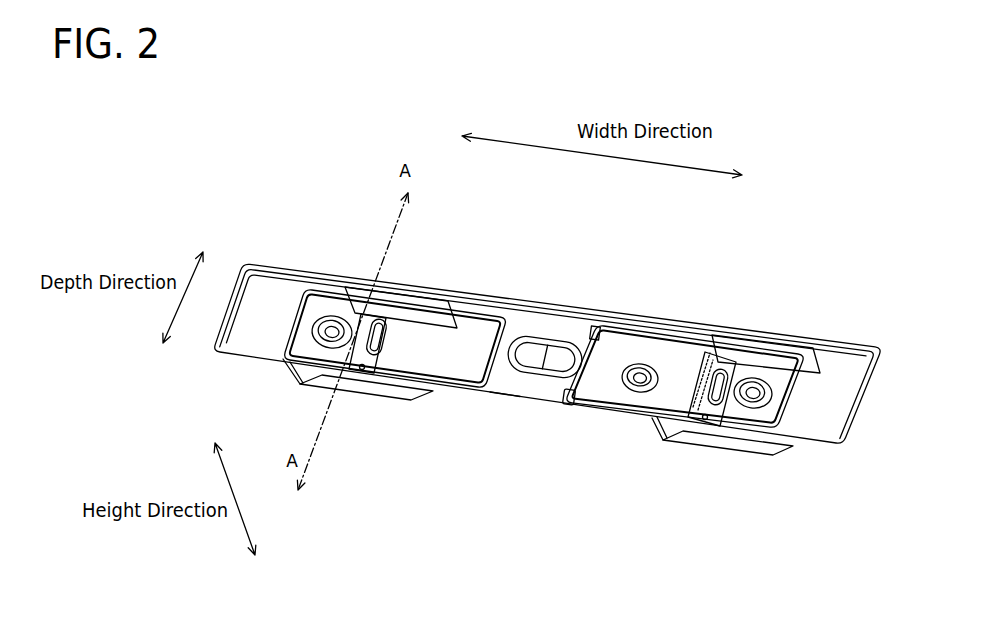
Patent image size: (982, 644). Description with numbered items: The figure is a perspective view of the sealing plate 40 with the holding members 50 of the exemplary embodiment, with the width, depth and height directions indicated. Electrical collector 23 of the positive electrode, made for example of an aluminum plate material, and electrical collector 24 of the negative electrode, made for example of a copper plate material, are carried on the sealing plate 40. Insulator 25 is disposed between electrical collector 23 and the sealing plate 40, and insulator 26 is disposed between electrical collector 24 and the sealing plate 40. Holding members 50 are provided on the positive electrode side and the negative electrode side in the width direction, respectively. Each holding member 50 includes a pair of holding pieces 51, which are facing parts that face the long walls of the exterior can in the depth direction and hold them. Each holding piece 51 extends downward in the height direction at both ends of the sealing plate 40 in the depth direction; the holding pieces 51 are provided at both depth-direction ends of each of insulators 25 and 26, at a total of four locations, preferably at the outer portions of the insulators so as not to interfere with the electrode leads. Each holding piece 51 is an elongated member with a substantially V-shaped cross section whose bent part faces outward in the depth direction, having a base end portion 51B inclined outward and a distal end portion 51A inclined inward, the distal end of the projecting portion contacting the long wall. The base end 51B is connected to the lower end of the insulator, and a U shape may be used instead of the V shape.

The sealing plate 40 is at (858, 370).
The holding member 50 is at (526, 364).
The holding piece 51 is at (526, 369).
The distal end portion 51A is at (418, 302).
The base end portion 51B is at (341, 277).
The electrical collector 23 is at (622, 395).
The electrical collector 24 is at (305, 338).
The insulator 25 is at (560, 392).
The insulator 26 is at (500, 372).